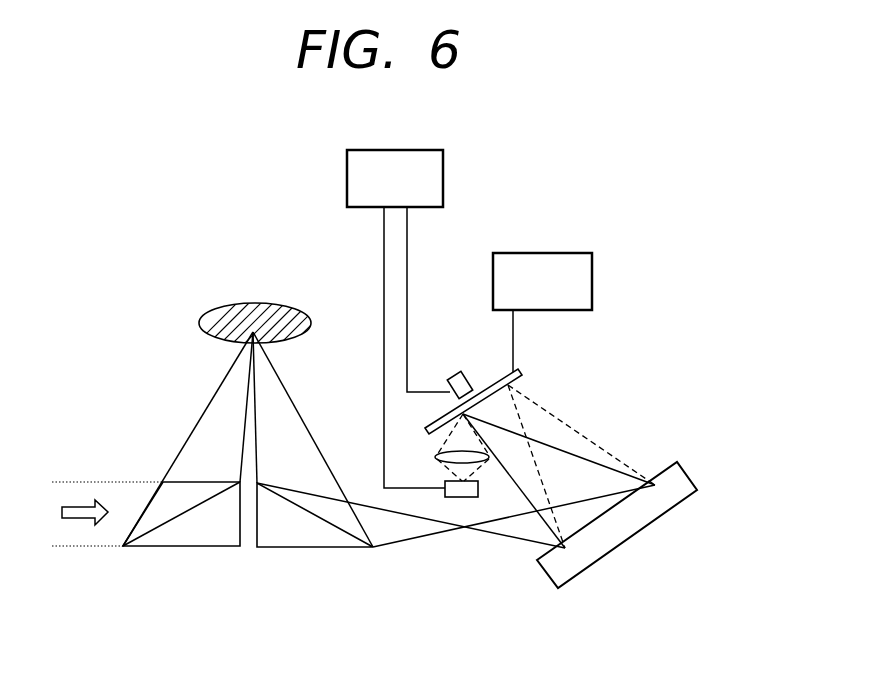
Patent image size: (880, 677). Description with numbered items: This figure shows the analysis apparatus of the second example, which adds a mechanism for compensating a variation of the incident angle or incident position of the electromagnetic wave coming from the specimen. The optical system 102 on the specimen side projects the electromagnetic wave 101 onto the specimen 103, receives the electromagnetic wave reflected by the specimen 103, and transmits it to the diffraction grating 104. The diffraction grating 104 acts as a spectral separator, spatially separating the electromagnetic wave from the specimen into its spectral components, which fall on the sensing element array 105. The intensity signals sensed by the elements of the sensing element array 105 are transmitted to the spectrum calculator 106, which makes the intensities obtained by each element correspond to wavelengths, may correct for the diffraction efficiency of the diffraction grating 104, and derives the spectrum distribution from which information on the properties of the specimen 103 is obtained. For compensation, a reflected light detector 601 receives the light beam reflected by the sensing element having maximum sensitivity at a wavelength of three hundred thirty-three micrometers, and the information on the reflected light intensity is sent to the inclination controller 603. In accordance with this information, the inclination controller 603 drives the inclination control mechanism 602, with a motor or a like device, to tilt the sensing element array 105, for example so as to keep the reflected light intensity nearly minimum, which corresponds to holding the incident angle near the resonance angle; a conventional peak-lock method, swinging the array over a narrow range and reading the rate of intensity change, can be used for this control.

The electromagnetic wave 101 is at (100, 482).
The optical system 102 is at (203, 547).
The specimen 103 is at (240, 302).
The diffraction grating 104 is at (645, 530).
The sensing element array 105 is at (515, 368).
The spectrum calculator 106 is at (560, 252).
The reflected light detector 601 is at (471, 497).
The inclination control mechanism 602 is at (458, 375).
The inclination controller 603 is at (445, 173).